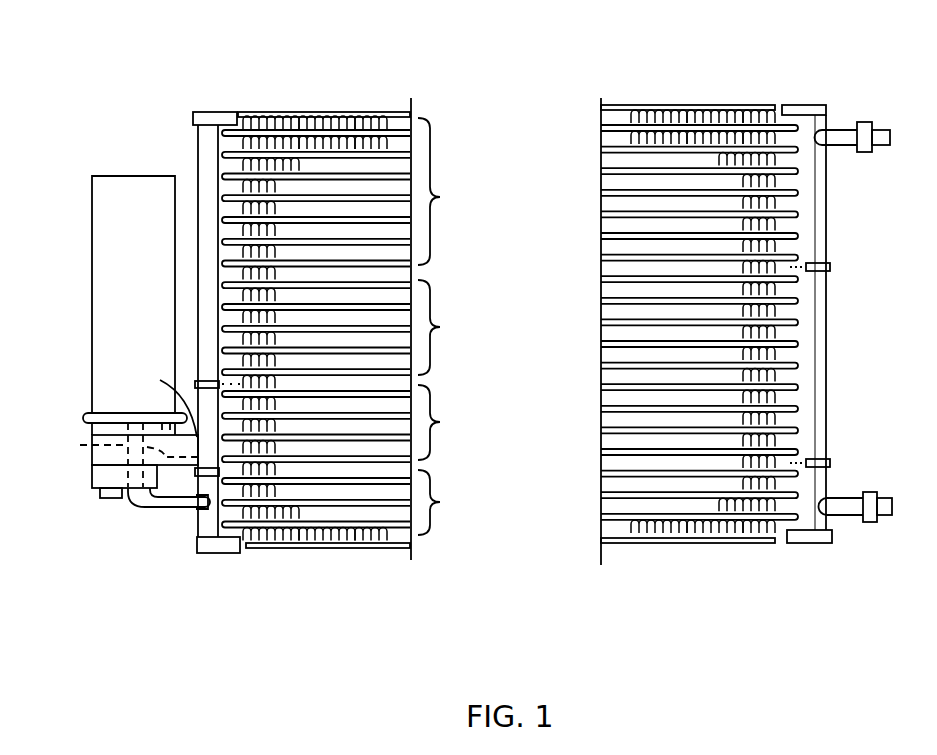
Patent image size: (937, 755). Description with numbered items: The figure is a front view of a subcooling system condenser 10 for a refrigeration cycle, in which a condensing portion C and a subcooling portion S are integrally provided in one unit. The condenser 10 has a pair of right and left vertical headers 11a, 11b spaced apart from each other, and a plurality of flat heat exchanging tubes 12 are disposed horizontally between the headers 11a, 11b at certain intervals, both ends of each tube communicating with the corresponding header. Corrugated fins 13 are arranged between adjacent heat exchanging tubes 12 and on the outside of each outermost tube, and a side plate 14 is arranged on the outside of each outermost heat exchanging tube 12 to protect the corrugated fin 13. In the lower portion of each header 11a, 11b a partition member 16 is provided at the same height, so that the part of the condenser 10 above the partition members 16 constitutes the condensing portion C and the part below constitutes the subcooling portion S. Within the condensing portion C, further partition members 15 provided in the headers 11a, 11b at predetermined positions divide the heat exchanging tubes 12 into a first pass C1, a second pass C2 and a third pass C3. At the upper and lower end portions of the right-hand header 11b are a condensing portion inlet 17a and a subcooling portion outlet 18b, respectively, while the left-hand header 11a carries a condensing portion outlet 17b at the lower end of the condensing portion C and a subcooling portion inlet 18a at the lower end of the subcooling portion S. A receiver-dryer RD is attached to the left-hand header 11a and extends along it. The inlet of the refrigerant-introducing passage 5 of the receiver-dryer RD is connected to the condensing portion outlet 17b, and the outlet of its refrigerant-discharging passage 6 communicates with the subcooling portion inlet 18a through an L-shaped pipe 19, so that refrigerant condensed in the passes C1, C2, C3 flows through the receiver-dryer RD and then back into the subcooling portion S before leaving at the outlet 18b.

The subcooling system condenser 10 is at (682, 102).
The left-hand header 11a is at (203, 150).
The right-hand header 11b is at (826, 342).
The flat heat exchanging tube 12 is at (382, 484).
The corrugated fin 13 is at (344, 147).
The side plate 14 is at (298, 110).
The partition member 15 is at (196, 381).
The partition member 16 is at (210, 478).
The condensing portion inlet 17a is at (850, 128).
The condensing portion outlet 17b is at (150, 393).
The subcooling portion inlet 18a is at (192, 510).
The subcooling portion outlet 18b is at (856, 515).
The L-shaped pipe 19 is at (132, 508).
The refrigerant-introducing passage 5 is at (150, 412).
The refrigerant-discharging passage 6 is at (115, 460).
The receiver-dryer RD is at (85, 268).
The condensing portion C is at (592, 293).
The first pass C1 is at (454, 191).
The second pass C2 is at (454, 327).
The third pass C3 is at (454, 422).
The subcooling portion S is at (446, 502).